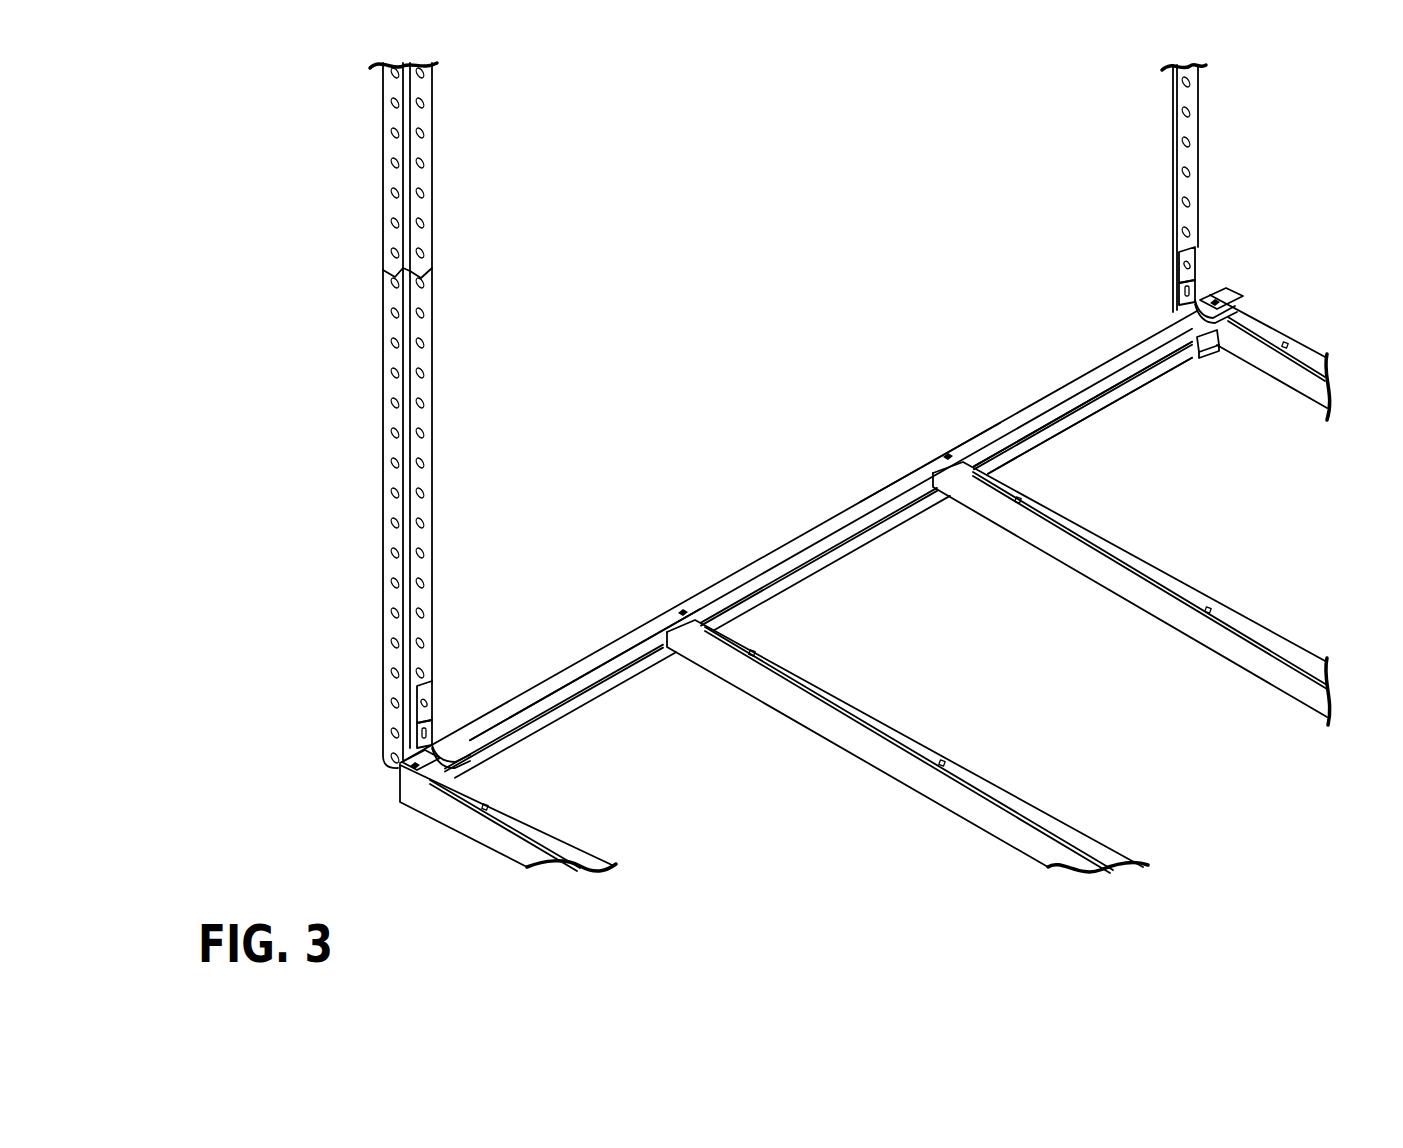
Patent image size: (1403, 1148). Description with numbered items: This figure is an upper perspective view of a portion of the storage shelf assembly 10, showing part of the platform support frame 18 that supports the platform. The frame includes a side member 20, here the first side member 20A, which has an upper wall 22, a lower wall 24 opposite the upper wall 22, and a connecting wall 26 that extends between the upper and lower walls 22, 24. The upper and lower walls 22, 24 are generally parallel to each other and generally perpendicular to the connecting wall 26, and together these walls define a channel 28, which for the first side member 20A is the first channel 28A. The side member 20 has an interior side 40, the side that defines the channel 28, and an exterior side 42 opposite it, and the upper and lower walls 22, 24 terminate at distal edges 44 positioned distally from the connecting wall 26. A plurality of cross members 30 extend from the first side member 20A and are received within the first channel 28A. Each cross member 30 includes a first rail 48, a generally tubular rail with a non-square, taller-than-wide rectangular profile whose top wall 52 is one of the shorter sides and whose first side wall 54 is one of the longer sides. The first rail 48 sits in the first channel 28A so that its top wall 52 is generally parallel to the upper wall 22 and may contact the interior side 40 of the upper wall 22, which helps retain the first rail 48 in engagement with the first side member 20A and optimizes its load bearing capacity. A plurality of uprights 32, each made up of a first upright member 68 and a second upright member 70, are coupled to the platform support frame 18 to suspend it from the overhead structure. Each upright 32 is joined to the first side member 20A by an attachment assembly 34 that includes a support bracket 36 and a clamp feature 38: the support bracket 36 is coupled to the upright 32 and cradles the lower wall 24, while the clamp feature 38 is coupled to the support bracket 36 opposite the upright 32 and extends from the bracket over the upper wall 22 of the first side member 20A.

The storage shelf assembly 10 is at (812, 492).
The platform support frame 18 is at (810, 508).
The side member 20 is at (810, 508).
The first side member 20A is at (1080, 386).
The upper wall 22 is at (798, 537).
The lower wall 24 is at (823, 568).
The connecting wall 26 is at (818, 557).
The channel 28 is at (921, 409).
The first channel 28A is at (921, 409).
The cross member 30 is at (853, 609).
The upright 32 is at (780, 413).
The attachment assembly 34 is at (787, 481).
The support bracket 36 is at (779, 461).
The clamp feature 38 is at (787, 515).
The interior side 40 is at (831, 535).
The exterior side 42 is at (586, 617).
The distal edge 44 is at (1090, 356).
The first rail 48 is at (890, 648).
The top wall 52 is at (886, 571).
The first side wall 54 is at (830, 595).
The first upright member 68 is at (460, 411).
The second upright member 70 is at (390, 447).